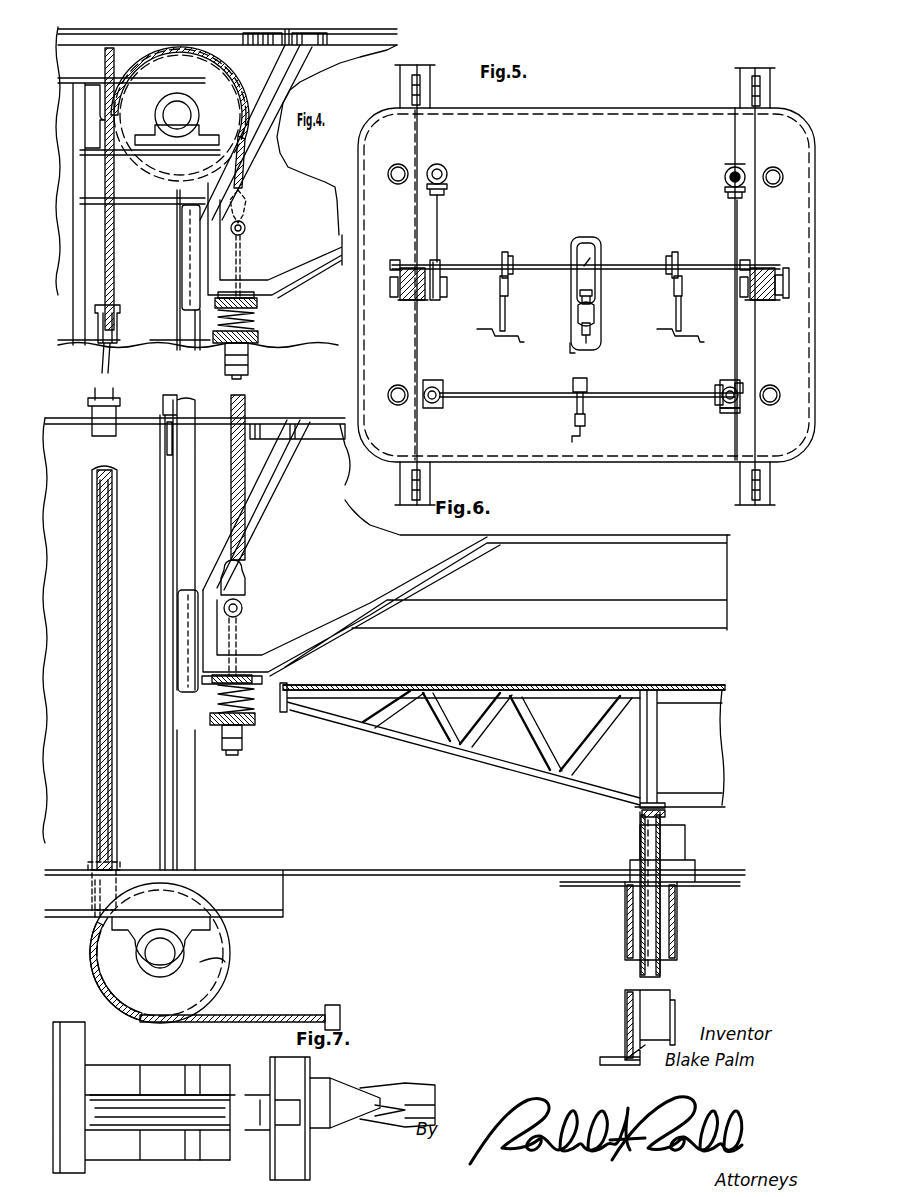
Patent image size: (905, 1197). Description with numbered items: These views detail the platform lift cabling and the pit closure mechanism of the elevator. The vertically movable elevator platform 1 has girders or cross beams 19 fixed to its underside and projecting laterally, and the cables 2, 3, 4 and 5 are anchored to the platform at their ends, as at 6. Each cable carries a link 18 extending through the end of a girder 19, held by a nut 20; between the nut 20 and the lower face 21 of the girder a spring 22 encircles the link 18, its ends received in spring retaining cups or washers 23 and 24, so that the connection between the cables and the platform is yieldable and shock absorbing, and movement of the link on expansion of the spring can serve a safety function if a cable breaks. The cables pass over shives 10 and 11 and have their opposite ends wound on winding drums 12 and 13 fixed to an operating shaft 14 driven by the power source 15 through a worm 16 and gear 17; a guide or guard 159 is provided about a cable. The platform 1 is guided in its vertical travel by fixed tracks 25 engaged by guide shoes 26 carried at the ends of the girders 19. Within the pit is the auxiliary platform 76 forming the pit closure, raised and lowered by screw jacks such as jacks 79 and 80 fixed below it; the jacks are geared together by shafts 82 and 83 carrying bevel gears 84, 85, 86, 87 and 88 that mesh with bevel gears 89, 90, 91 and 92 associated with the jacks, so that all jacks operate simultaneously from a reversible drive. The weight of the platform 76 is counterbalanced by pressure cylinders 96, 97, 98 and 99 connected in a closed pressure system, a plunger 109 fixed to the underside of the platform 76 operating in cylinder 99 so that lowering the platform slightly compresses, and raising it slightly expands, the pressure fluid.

In FIG. 4, the elevator platform 1 is at (400, 45).
In FIG. 6, the elevator platform 1 is at (315, 420).
In FIG. 4, the cable 2 is at (105, 258).
In FIG. 5, the cable 2 is at (435, 70).
In FIG. 6, the cable 2 is at (98, 603).
In FIG. 5, the cable 3 is at (415, 352).
In FIG. 5, the cable 4 is at (753, 140).
In FIG. 5, the cable 5 is at (750, 352).
In FIG. 4, the cable anchor 6 is at (247, 228).
In FIG. 6, the cable anchor 6 is at (242, 600).
In FIG. 4, the shive 10 is at (145, 59).
In FIG. 5, the shive 11 is at (420, 85).
In FIG. 6, the shive 11 is at (230, 960).
In FIG. 7, the shive 11 is at (215, 1052).
In FIG. 5, the winding drum 12 is at (392, 262).
In FIG. 5, the winding drum 13 is at (755, 270).
In FIG. 5, the operating shaft 14 is at (540, 258).
In FIG. 5, the power source 15 is at (594, 318).
In FIG. 5, the worm 16 is at (600, 285).
In FIG. 5, the gear 17 is at (616, 249).
In FIG. 4, the link 18 is at (240, 262).
In FIG. 6, the link 18 is at (236, 635).
In FIG. 4, the girder 19 is at (300, 248).
In FIG. 6, the girder 19 is at (585, 585).
In FIG. 7, the girder 19 is at (395, 1095).
In FIG. 4, the nut 20 is at (250, 352).
In FIG. 6, the nut 20 is at (244, 735).
In FIG. 4, the lower face of girder 21 is at (260, 303).
In FIG. 6, the lower face of girder 21 is at (262, 680).
In FIG. 4, the spring 22 is at (258, 320).
In FIG. 6, the spring 22 is at (258, 700).
In FIG. 4, the spring retaining cup 23 is at (215, 315).
In FIG. 6, the spring retaining cup 23 is at (205, 690).
In FIG. 4, the spring retaining washer 24 is at (212, 330).
In FIG. 6, the spring retaining washer 24 is at (212, 720).
In FIG. 4, the fixed track 25 is at (187, 352).
In FIG. 6, the fixed track 25 is at (188, 500).
In FIG. 4, the guide shoe 26 is at (190, 262).
In FIG. 6, the guide shoe 26 is at (180, 650).
In FIG. 6, the auxiliary platform 76 is at (700, 690).
In FIG. 5, the screw jack 79 is at (725, 177).
In FIG. 5, the screw jack 80 is at (712, 388).
In FIG. 5, the shaft 82 is at (648, 383).
In FIG. 5, the shaft 83 is at (740, 338).
In FIG. 5, the bevel gear 84 is at (447, 190).
In FIG. 5, the bevel gear 85 is at (587, 376).
In FIG. 5, the bevel gear 86 is at (725, 410).
In FIG. 5, the bevel gear 87 is at (742, 385).
In FIG. 5, the bevel gear 88 is at (725, 192).
In FIG. 5, the bevel gear 89 is at (447, 174).
In FIG. 5, the bevel gear 90 is at (430, 408).
In FIG. 5, the bevel gear 91 is at (733, 405).
In FIG. 5, the bevel gear 92 is at (730, 166).
In FIG. 5, the cylinder 96 is at (400, 162).
In FIG. 5, the cylinder 97 is at (395, 405).
In FIG. 5, the cylinder 98 is at (785, 158).
In FIG. 5, the cylinder 99 is at (772, 405).
In FIG. 6, the cylinder 99 is at (680, 945).
In FIG. 6, the plunger 109 is at (650, 917).
In FIG. 6, the cable guard 159 is at (108, 630).